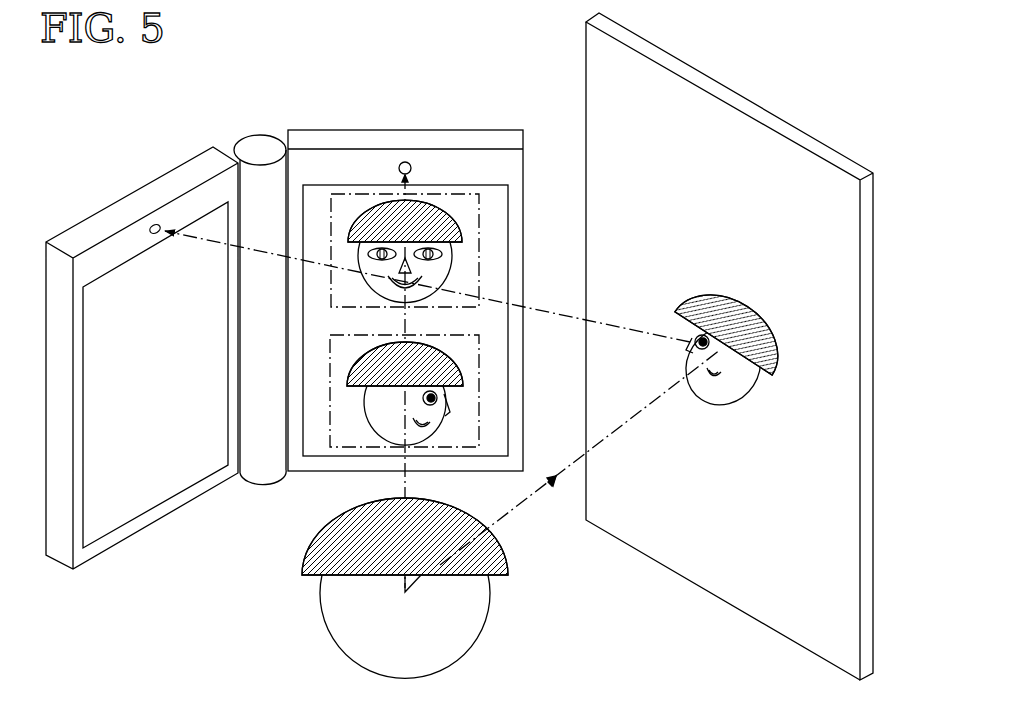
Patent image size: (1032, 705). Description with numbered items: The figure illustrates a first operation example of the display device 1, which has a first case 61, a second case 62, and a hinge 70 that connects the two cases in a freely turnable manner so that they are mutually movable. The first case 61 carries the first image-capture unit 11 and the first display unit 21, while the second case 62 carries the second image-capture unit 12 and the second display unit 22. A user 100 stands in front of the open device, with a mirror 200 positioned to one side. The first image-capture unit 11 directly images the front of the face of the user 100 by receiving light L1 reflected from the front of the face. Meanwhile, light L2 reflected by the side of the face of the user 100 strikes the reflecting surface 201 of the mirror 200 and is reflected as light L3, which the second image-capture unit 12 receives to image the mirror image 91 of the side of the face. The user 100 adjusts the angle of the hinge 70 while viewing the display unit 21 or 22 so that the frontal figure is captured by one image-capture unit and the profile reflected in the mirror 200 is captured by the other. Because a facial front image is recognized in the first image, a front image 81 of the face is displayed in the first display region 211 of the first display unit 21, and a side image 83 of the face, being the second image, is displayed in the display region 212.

The display device 1 is at (192, 137).
The second case 62 is at (108, 211).
The second display unit 22 is at (143, 476).
The second image-capture unit 12 is at (153, 223).
The hinge 70 is at (260, 149).
The first case 61 is at (487, 141).
The first display unit 21 is at (320, 208).
The first image-capture unit 11 is at (407, 160).
The first display region 211 is at (480, 223).
The first display region 212 is at (480, 372).
The front image 81 is at (465, 253).
The side image 83 is at (464, 404).
The user 100 is at (507, 643).
The light L1 is at (405, 482).
The light L2 is at (552, 498).
The light L3 is at (202, 250).
The mirror 200 is at (829, 121).
The reflecting surface 201 is at (668, 543).
The mirror image 91 is at (747, 305).